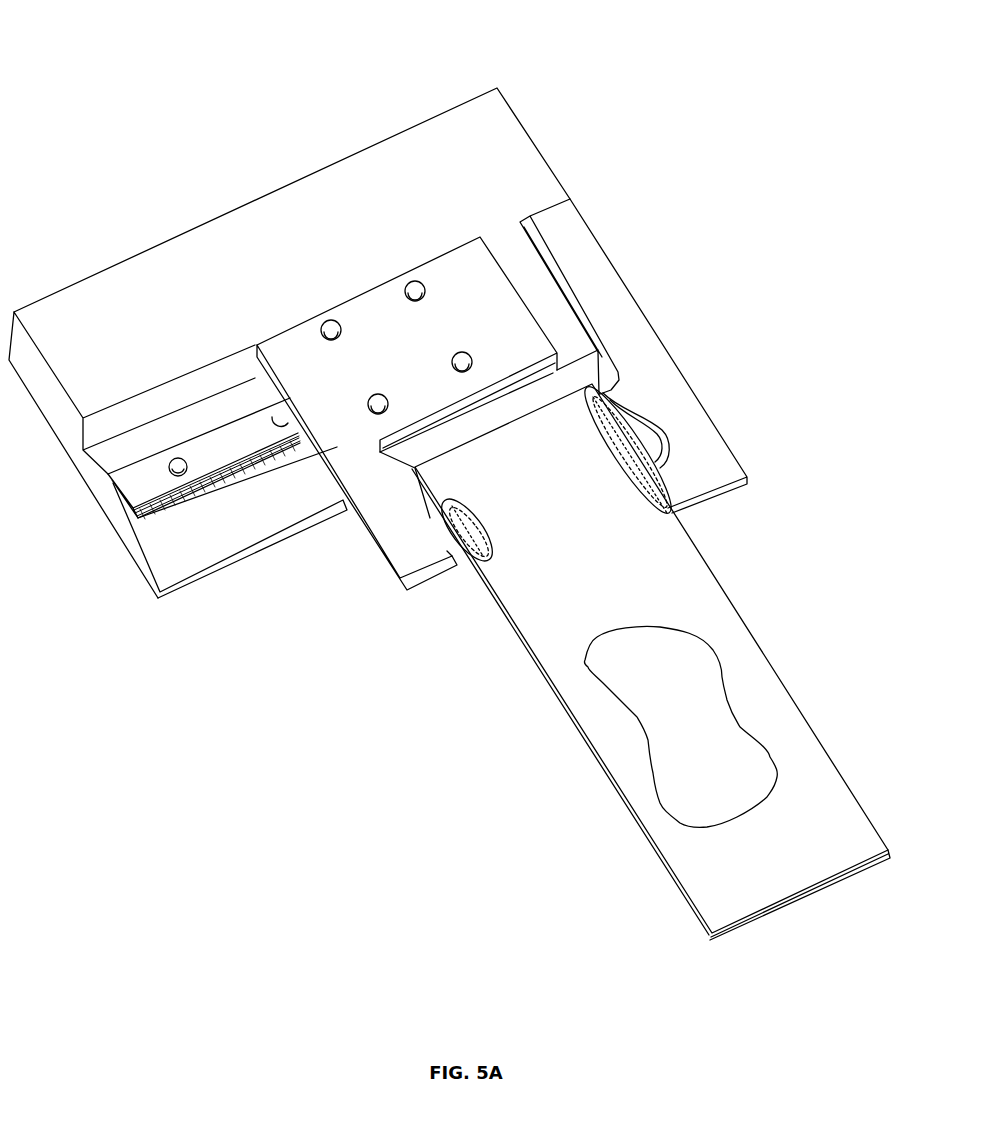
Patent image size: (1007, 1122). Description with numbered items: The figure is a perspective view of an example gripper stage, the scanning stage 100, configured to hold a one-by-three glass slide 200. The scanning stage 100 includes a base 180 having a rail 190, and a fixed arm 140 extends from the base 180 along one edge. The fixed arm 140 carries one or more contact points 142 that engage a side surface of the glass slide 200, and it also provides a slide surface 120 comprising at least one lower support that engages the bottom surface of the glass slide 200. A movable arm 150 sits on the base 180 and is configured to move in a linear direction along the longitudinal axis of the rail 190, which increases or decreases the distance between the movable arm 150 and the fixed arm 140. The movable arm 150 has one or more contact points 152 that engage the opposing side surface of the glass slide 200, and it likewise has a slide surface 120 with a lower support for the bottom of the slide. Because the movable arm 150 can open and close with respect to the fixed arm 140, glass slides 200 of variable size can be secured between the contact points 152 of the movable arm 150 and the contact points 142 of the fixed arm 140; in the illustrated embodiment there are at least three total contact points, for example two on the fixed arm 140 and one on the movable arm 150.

The scanning stage 100 is at (142, 105).
The slide surface 120 is at (630, 497).
The fixed arm 140 is at (605, 305).
The contact points 142 is at (675, 472).
The movable arm 150 is at (388, 328).
The contact points 152 is at (432, 540).
The base 180 is at (485, 150).
The rail 190 is at (157, 485).
The glass slide 200 is at (720, 855).